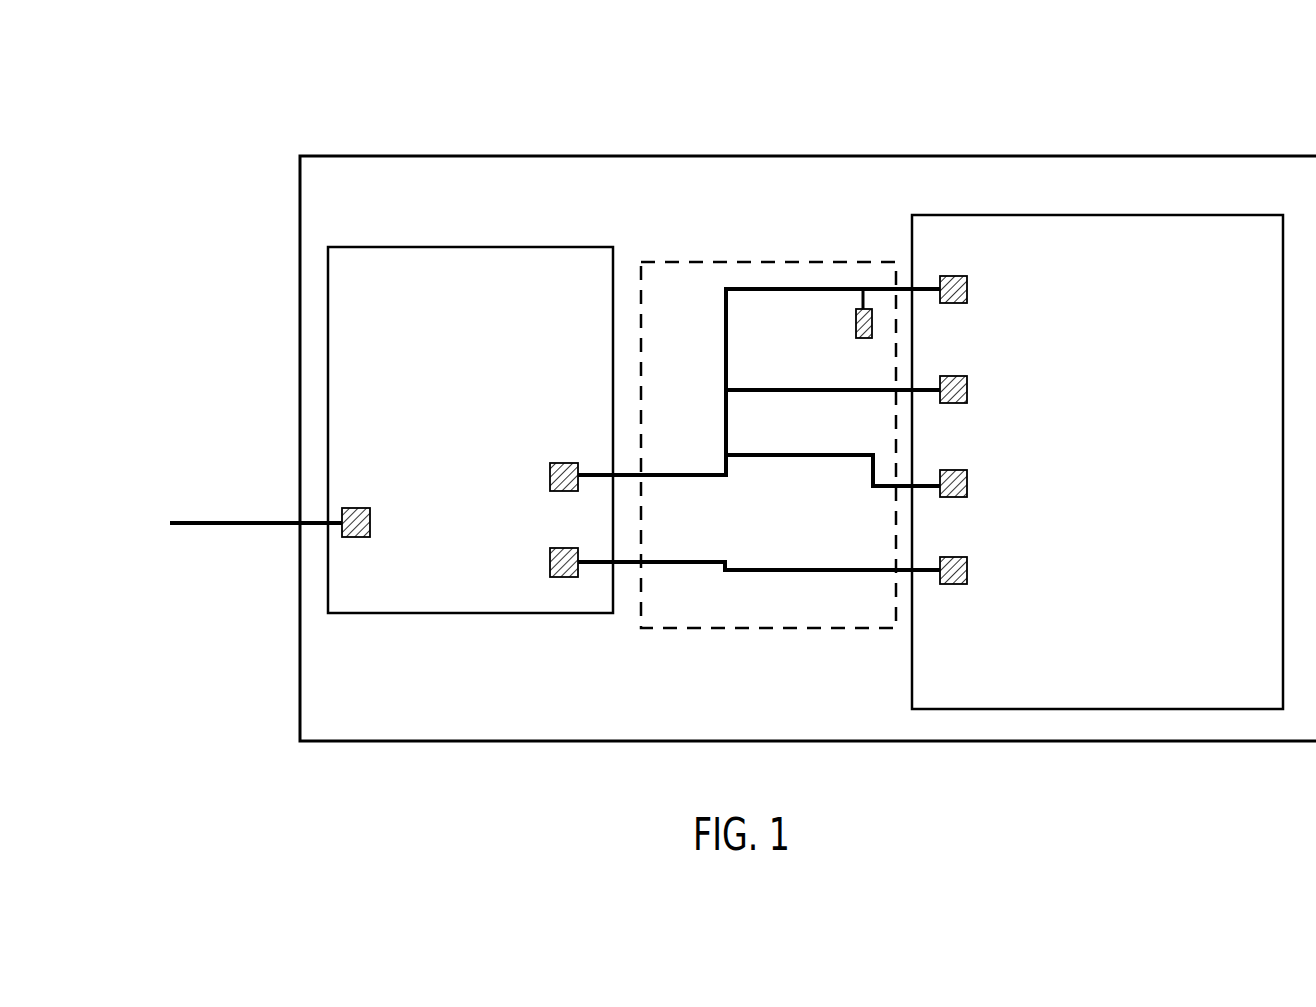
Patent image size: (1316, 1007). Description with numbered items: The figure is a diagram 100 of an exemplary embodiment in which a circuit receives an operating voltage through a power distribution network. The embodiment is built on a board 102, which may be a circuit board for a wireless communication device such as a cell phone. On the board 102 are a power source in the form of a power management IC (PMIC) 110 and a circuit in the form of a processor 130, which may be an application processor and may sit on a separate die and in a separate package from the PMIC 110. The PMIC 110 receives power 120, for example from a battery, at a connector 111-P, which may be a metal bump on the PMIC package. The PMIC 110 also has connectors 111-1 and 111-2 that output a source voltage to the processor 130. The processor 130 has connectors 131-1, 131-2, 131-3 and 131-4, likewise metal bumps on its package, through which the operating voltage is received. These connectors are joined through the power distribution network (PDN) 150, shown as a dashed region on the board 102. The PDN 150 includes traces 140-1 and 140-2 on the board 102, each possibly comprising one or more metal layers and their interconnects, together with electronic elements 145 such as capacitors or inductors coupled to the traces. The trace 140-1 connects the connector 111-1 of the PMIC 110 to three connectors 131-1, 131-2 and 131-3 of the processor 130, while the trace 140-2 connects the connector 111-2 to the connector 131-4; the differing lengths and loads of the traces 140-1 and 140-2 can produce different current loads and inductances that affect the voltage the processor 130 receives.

The diagram 100 is at (205, 87).
The board 102 is at (807, 427).
The power management IC (PMIC) 110 is at (562, 246).
The connector 111-P is at (371, 514).
The connector 111-1 is at (550, 470).
The connector 111-2 is at (550, 556).
The power 120 is at (252, 502).
The processor 130 is at (1238, 215).
The connector 131-1 is at (967, 284).
The connector 131-2 is at (967, 384).
The connector 131-3 is at (967, 478).
The connector 131-4 is at (967, 565).
The trace 140-1 is at (822, 454).
The trace 140-2 is at (825, 568).
The electronic element 145 is at (856, 326).
The power distribution network (PDN) 150 is at (833, 630).